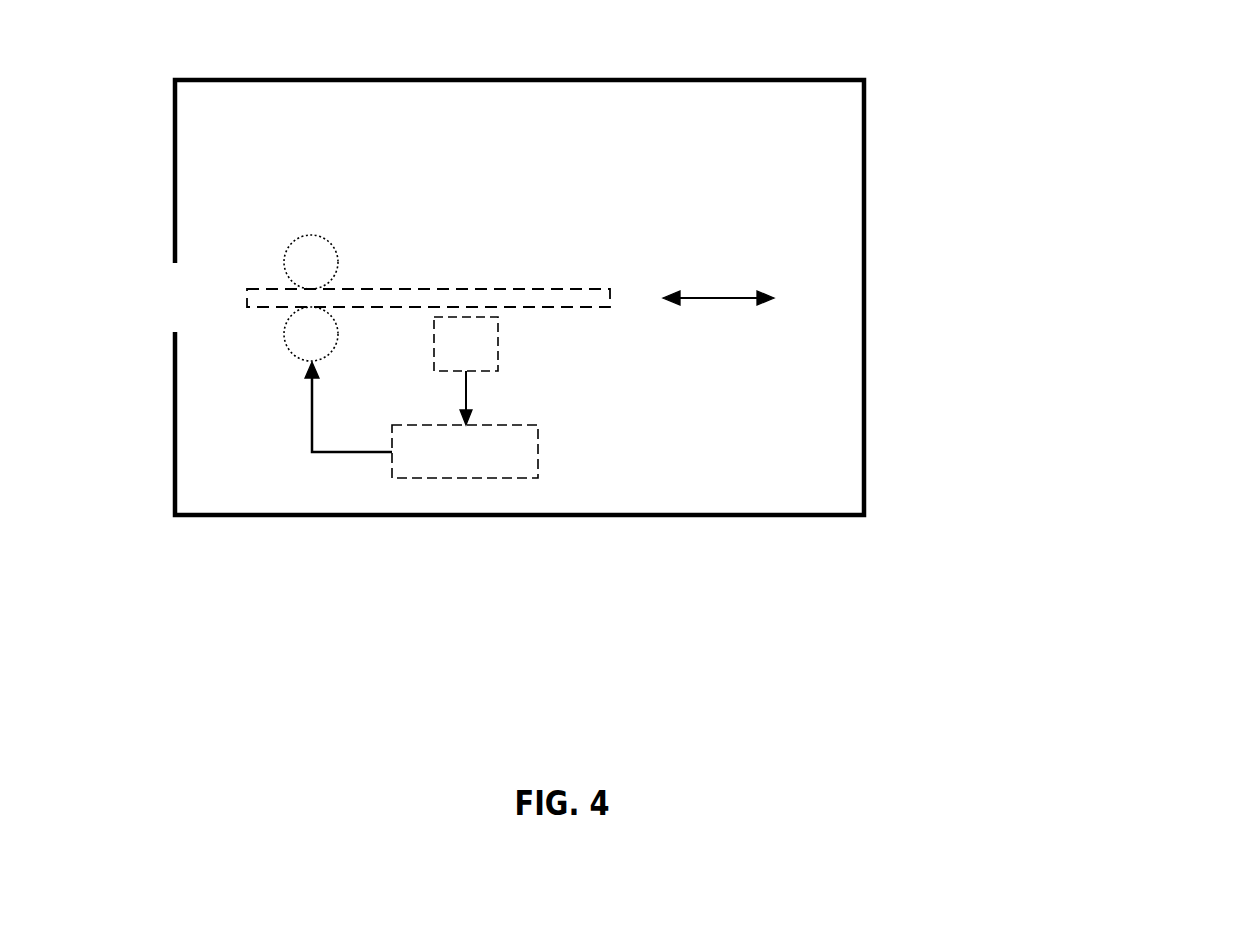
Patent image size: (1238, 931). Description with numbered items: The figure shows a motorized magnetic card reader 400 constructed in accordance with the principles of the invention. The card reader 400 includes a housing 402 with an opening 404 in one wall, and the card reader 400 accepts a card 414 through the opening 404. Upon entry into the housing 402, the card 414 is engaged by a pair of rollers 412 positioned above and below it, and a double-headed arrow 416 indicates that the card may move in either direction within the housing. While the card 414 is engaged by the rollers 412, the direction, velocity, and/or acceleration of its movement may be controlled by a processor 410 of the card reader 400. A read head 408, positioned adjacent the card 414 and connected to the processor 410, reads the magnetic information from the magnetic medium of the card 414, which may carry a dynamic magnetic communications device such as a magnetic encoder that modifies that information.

The motorized magnetic card reader 400 is at (1182, 292).
The housing 402 is at (258, 80).
The opening 404 is at (182, 299).
The read head 408 is at (442, 373).
The processor 410 is at (433, 480).
The rollers 412 is at (325, 238).
The card 414 is at (523, 298).
The direction of movement 416 is at (710, 296).